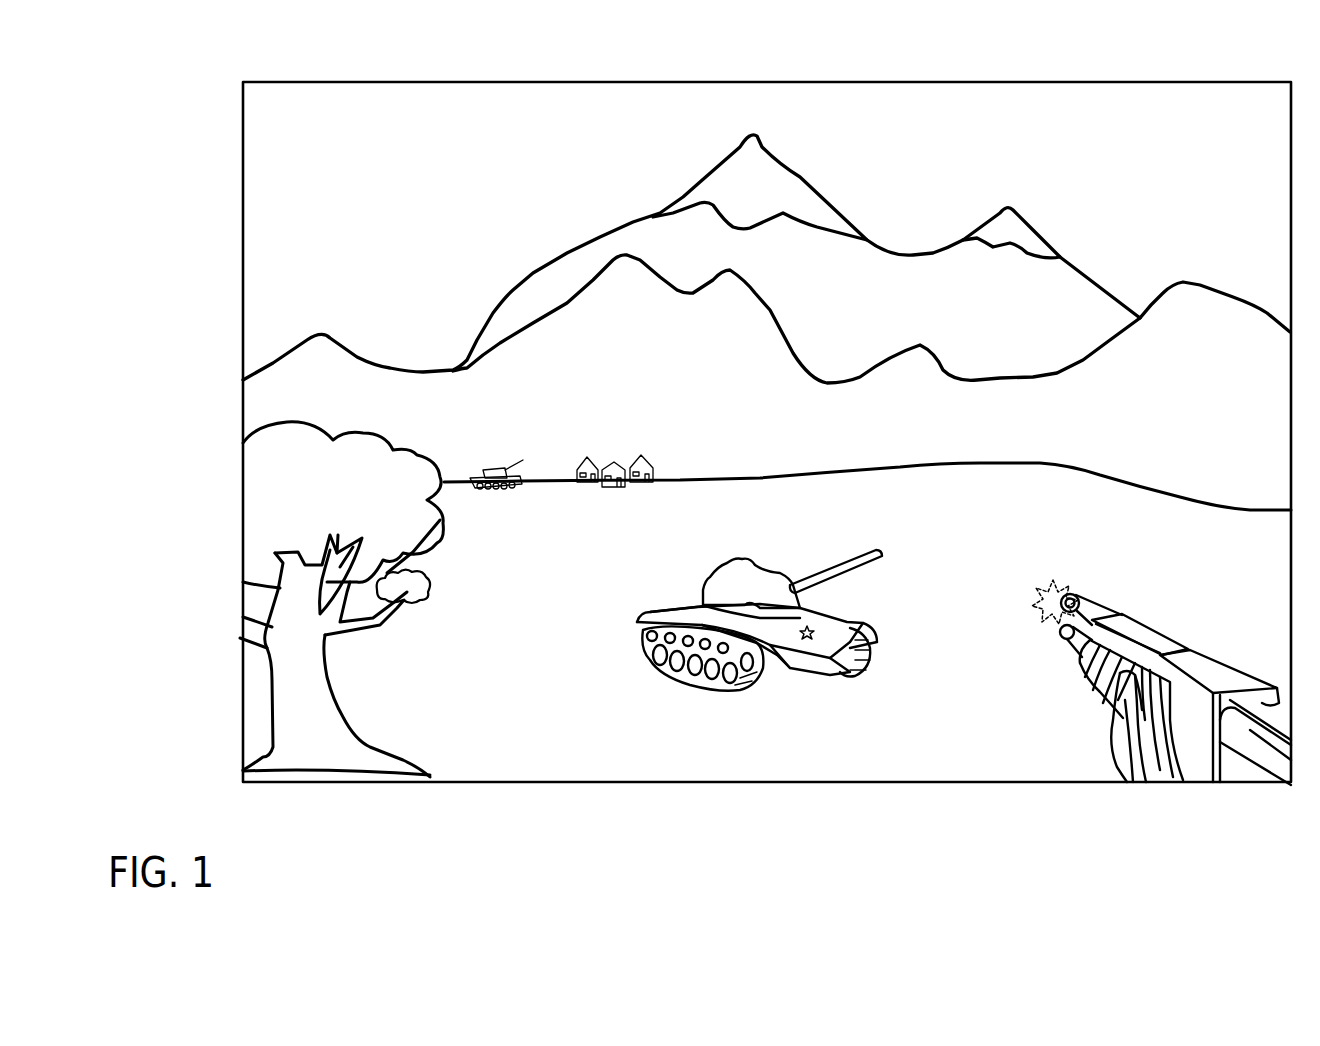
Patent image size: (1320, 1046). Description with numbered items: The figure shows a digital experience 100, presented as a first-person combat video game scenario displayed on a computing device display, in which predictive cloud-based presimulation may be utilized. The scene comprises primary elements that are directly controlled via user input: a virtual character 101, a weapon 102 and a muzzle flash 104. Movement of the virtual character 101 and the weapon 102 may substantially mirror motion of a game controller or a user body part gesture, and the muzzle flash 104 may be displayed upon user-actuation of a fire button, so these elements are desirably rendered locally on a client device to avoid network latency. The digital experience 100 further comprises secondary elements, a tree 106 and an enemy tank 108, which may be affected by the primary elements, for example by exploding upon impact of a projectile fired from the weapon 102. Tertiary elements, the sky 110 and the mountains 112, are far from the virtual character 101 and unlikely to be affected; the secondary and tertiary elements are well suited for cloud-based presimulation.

The digital experience 100 is at (1163, 58).
The sky 110 is at (469, 158).
The mountains 112 is at (521, 287).
The tree 106 is at (368, 750).
The enemy tank 108 is at (716, 575).
The muzzle flash 104 is at (1090, 590).
The weapon 102 is at (1141, 628).
The virtual character 101 is at (1116, 748).